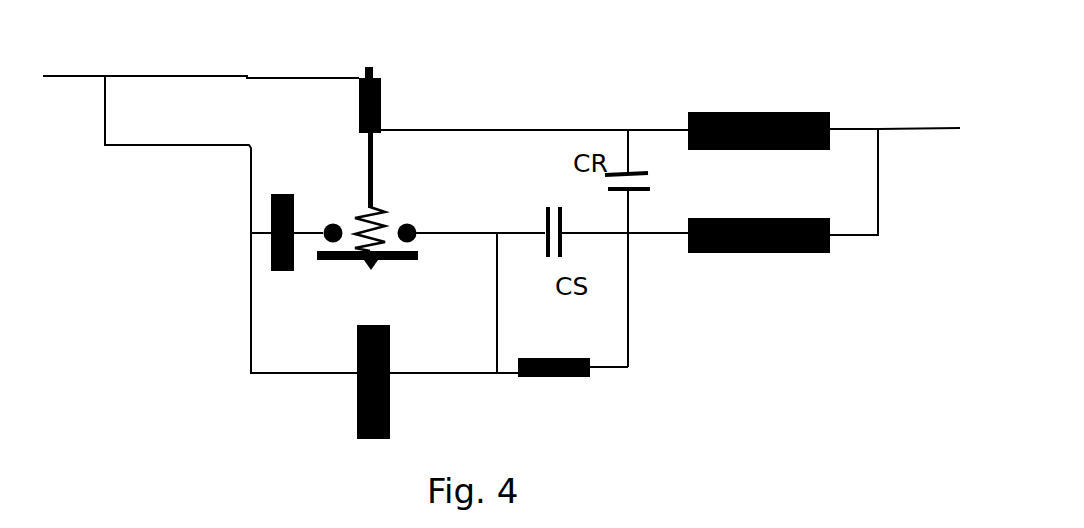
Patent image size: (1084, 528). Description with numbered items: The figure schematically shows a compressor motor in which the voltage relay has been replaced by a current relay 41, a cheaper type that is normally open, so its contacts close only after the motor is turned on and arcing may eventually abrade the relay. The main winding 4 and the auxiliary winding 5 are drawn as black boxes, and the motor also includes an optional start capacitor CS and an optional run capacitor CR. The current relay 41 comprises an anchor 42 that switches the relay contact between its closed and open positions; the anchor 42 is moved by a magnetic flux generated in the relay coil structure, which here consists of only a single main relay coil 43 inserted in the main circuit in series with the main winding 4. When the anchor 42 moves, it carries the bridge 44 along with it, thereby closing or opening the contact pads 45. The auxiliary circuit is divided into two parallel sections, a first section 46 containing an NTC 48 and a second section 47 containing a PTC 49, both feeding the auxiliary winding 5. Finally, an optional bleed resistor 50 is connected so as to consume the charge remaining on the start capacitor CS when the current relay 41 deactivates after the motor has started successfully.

The main winding 4 is at (749, 112).
The auxiliary winding 5 is at (745, 218).
The current relay 41 is at (348, 66).
The anchor 42 is at (360, 170).
The main relay coil 43 is at (384, 105).
The bridge 44 is at (350, 261).
The contact pads 45 is at (331, 224).
The first section 46 is at (448, 230).
The second section 47 is at (410, 371).
The NTC 48 is at (283, 272).
The PTC 49 is at (354, 440).
The bleed resistor 50 is at (575, 378).